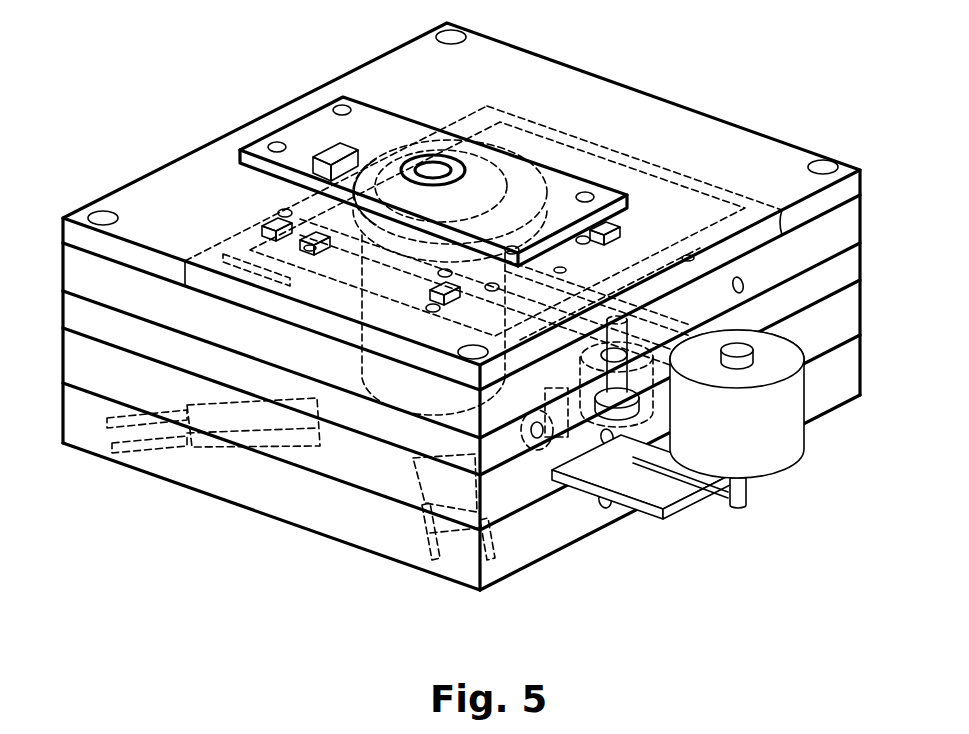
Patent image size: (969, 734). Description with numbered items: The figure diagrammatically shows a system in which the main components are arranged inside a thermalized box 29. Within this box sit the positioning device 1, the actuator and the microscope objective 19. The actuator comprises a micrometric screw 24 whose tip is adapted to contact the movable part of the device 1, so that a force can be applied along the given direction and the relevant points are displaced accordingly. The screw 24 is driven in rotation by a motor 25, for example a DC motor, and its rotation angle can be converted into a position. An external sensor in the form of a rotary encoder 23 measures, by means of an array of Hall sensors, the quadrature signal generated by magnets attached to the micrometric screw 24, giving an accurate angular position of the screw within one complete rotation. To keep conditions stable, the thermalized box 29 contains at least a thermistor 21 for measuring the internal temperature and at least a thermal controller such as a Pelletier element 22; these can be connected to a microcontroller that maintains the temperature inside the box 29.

The device 1 is at (222, 296).
The microscope objective 19 is at (392, 168).
The thermistor 21 is at (333, 148).
The Pelletier element 22 is at (202, 443).
The rotary encoder 23 is at (672, 493).
The micrometric screw 24 is at (590, 430).
The motor 25 is at (800, 438).
The thermalized box 29 is at (730, 140).